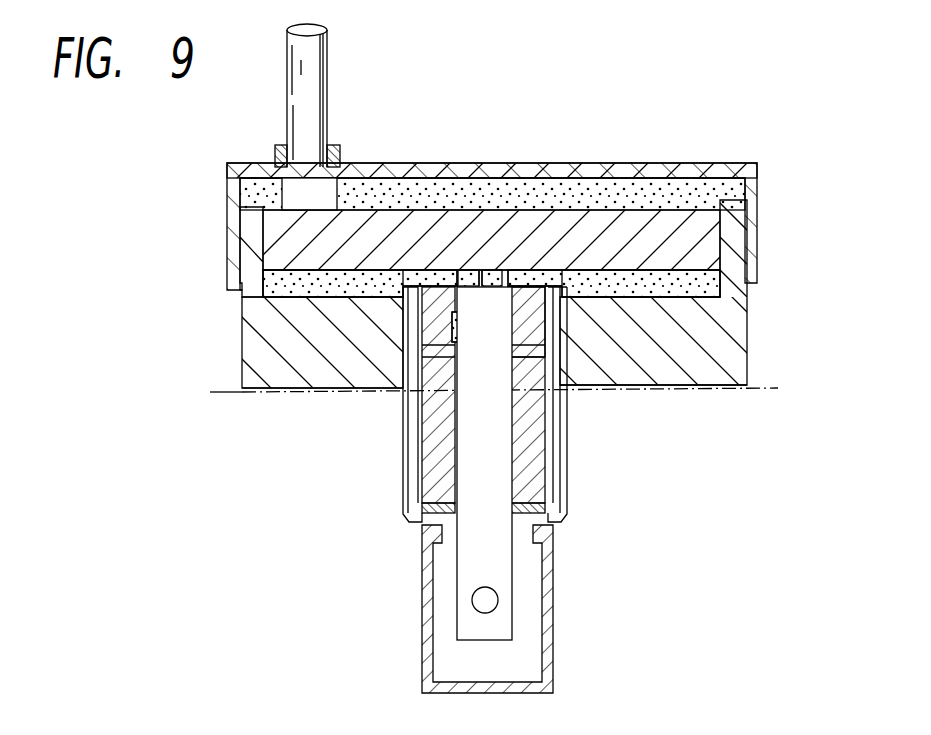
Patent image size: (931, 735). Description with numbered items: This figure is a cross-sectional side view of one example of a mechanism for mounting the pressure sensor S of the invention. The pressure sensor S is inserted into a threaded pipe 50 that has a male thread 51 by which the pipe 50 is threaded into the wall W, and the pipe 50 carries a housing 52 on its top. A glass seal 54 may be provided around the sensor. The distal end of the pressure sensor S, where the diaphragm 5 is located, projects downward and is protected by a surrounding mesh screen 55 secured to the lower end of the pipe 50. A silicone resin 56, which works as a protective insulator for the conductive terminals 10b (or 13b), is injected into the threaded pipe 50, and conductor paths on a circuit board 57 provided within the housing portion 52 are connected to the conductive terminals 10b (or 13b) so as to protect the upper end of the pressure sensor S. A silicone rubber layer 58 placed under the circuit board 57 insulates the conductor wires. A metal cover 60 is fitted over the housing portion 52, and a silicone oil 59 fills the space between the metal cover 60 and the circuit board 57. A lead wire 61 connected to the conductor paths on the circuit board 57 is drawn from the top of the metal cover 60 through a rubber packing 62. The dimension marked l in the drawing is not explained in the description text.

The diaphragm 5 is at (478, 606).
The conductive terminals 10b is at (385, 380).
The conductive terminals 13b is at (462, 332).
The threaded pipe 50 is at (250, 392).
The male thread 51 is at (567, 437).
The housing 52 is at (263, 298).
The glass seal 54 is at (410, 476).
The mesh screen 55 is at (553, 627).
The silicone resin 56 is at (547, 333).
The circuit board 57 is at (570, 215).
The silicone rubber layer 58 is at (683, 290).
The silicone oil 59 is at (688, 187).
The metal cover 60 is at (457, 170).
The lead wire 61 is at (327, 67).
The rubber packing 62 is at (337, 203).
The pressure sensor S is at (490, 565).
The wall W is at (770, 380).
The gap dimension l is at (462, 270).